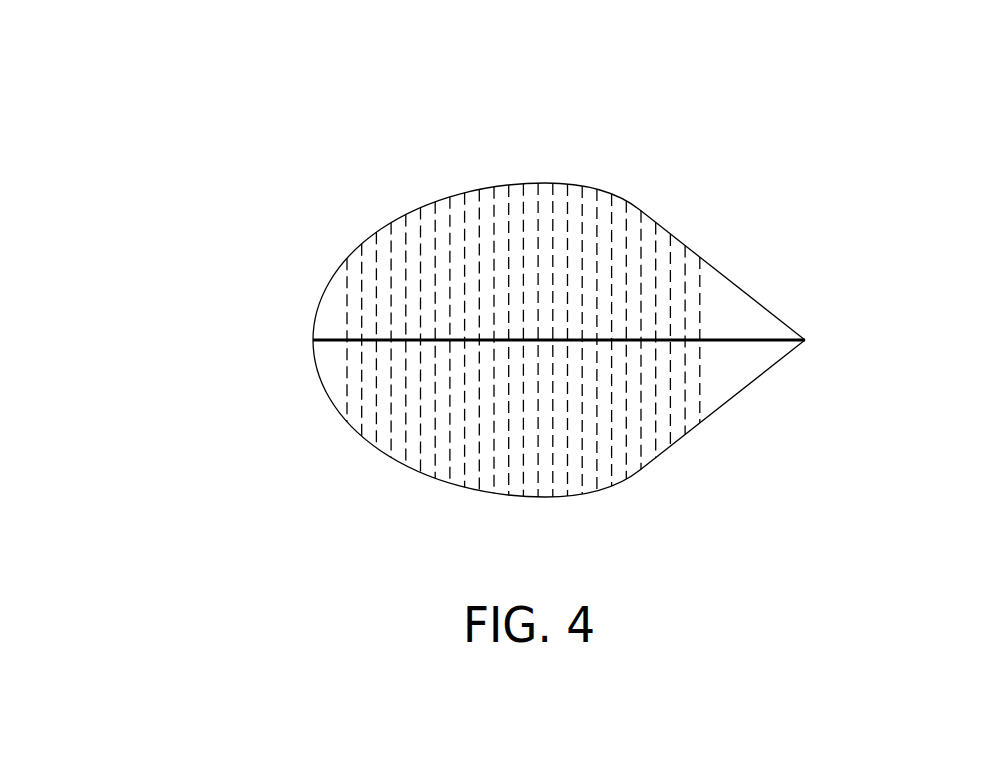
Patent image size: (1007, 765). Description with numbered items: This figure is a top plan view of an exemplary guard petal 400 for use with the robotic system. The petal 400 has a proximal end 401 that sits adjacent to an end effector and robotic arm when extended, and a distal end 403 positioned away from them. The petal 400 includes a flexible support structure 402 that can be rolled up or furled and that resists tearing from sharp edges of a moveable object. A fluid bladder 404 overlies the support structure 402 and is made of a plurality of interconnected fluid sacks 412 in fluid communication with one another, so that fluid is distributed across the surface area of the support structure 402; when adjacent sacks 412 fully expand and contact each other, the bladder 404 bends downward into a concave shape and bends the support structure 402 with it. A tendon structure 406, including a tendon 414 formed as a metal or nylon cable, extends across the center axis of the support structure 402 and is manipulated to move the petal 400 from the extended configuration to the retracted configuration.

The guard petal 400 is at (172, 161).
The proximal end 401 is at (313, 358).
The support structure 402 is at (732, 385).
The distal end 403 is at (805, 340).
The fluid bladder 404 is at (565, 175).
The tendon structure 406 is at (321, 320).
The fluid sacks 412 is at (360, 252).
The tendon 414 is at (751, 339).